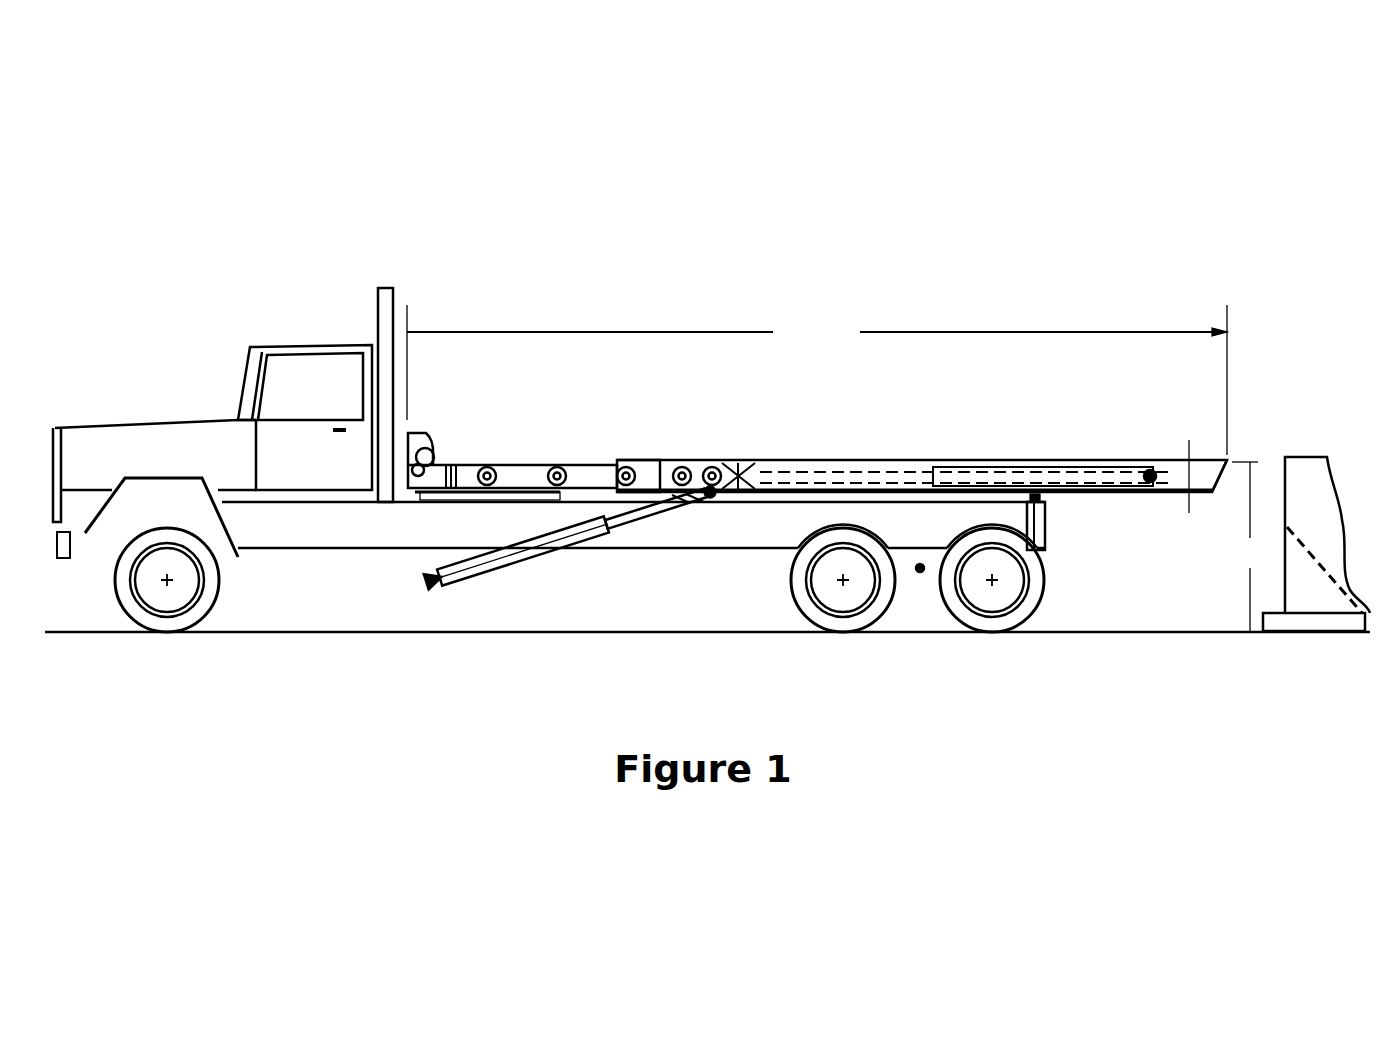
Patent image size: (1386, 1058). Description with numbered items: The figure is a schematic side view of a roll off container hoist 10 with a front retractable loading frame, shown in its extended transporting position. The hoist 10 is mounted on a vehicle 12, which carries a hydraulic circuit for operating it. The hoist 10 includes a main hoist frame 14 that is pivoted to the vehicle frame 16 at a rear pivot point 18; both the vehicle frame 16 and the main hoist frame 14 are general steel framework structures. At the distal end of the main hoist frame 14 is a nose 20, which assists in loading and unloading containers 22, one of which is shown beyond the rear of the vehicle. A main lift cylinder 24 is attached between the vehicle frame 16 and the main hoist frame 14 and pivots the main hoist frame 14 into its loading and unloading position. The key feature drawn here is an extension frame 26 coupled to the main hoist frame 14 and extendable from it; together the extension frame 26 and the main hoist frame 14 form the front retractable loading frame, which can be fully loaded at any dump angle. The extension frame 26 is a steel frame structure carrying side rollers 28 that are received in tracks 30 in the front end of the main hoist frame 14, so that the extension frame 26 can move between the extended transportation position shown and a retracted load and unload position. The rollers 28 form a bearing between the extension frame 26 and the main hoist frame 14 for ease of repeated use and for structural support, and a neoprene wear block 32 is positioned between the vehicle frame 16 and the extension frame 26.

The roll off container hoist 10 is at (965, 282).
The vehicle 12 is at (259, 345).
The main hoist frame 14 is at (852, 460).
The vehicle frame 16 is at (705, 530).
The rear pivot point 18 is at (1047, 503).
The nose 20 is at (1227, 462).
The container 22 is at (1327, 500).
The main lift cylinder 24 is at (470, 570).
The extension frame 26 is at (468, 466).
The side rollers 28 is at (488, 466).
The tracks 30 is at (657, 460).
The neoprene wear block 32 is at (462, 466).